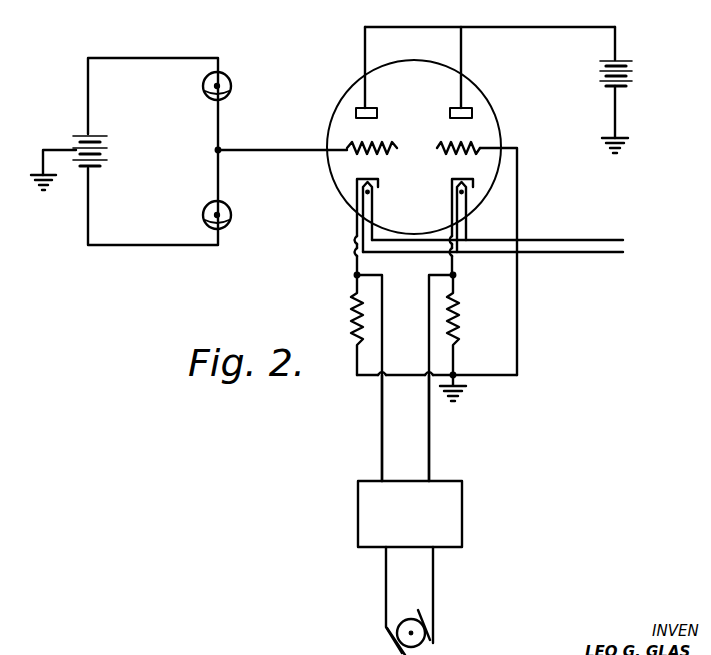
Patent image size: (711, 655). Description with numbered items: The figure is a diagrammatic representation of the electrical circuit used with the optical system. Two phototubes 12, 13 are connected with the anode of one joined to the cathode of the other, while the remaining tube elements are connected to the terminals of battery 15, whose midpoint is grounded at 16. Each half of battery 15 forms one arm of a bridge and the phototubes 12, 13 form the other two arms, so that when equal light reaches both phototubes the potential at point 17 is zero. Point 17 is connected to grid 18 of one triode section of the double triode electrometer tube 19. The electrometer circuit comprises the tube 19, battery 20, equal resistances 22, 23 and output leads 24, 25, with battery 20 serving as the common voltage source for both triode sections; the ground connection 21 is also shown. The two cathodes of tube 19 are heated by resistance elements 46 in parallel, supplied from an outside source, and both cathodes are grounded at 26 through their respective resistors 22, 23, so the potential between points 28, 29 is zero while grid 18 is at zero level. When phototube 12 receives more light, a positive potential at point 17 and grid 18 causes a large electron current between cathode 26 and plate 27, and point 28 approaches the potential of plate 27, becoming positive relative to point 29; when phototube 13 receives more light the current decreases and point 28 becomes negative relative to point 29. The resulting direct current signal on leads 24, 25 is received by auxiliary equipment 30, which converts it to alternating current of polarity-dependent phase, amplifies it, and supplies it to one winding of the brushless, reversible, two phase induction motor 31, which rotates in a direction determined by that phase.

The phototube 12 is at (229, 79).
The phototube 13 is at (228, 226).
The battery 15 is at (72, 141).
The ground 16 is at (38, 173).
The point of the phototube circuit 17 is at (216, 150).
The grid 18 is at (349, 146).
The double triode electrometer tube 19 is at (481, 92).
The battery 20 is at (633, 74).
The ground 21 is at (628, 142).
The resistance 22 is at (352, 321).
The resistance 23 is at (458, 320).
The output lead 24 is at (383, 440).
The output lead 25 is at (431, 441).
The cathode ground 26 is at (356, 179).
The plate 27 is at (356, 112).
The point 28 is at (356, 275).
The point 29 is at (455, 275).
The auxiliary equipment 30 is at (463, 527).
The two phase induction motor 31 is at (397, 630).
The resistance element 46 is at (366, 193).